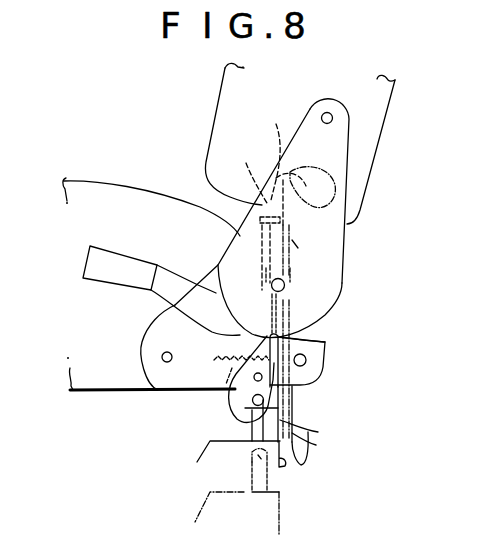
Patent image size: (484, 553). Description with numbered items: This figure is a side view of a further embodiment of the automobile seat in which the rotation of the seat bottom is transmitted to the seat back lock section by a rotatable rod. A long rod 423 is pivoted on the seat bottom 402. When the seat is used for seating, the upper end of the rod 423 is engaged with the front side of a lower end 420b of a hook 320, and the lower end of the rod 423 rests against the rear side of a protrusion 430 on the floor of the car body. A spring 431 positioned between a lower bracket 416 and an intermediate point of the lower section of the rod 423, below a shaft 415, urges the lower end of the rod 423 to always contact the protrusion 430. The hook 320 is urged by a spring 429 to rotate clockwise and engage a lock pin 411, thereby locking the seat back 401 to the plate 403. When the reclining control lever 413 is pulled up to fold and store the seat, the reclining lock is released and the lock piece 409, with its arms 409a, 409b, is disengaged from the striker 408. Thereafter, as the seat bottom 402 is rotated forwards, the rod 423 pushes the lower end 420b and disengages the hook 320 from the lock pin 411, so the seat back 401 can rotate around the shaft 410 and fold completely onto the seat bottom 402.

The hook 320 is at (306, 184).
The seat back 401 is at (216, 106).
The seat bottom 402 is at (125, 190).
The seat back plate 403 is at (341, 168).
The striker 408 is at (297, 459).
The lock piece 409 is at (247, 413).
The upper arm of bracket 409a is at (325, 341).
The lower arm of bracket 409b is at (281, 421).
The shaft 410 is at (330, 113).
The lock pin 411 is at (312, 250).
The reclining control lever 413 is at (121, 263).
The shaft 415 is at (285, 284).
The lower bracket 416 is at (165, 373).
The lower end of hook 420b is at (242, 171).
The rod 423 is at (294, 403).
The spring 429 is at (256, 151).
The protrusion 430 is at (205, 445).
The spring 431 is at (222, 390).